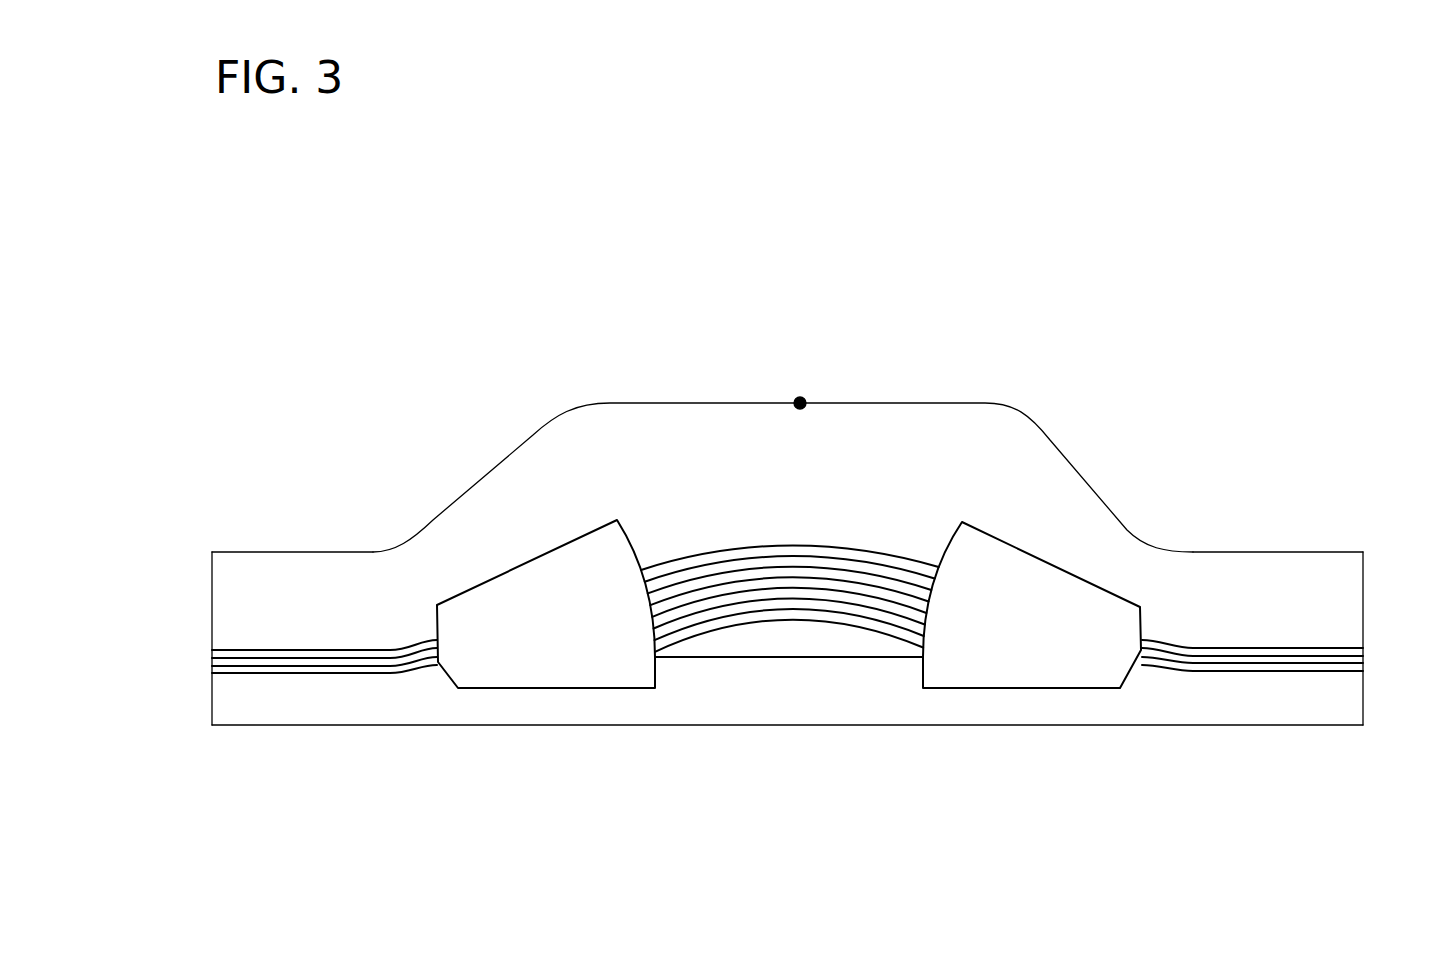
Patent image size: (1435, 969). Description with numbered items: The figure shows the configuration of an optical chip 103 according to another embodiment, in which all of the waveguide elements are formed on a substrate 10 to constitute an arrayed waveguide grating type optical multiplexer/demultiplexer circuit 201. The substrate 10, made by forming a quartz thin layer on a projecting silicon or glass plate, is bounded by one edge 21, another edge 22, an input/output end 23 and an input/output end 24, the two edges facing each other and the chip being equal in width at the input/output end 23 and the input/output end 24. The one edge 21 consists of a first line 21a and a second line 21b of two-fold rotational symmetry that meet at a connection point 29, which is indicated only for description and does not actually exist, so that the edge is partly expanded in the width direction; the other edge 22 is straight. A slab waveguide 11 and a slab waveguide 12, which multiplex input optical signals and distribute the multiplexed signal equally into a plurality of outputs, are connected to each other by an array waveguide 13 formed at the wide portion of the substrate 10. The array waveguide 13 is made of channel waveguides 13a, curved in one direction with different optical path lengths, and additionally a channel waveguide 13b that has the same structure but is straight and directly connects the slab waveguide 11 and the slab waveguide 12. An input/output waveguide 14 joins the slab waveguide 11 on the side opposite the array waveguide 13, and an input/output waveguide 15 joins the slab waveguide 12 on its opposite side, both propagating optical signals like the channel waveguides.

The optical chip 103 is at (293, 232).
The arrayed waveguide grating type optical multiplexer/demultiplexer circuit 201 is at (548, 128).
The substrate 10 is at (1190, 587).
The slab waveguide 11 is at (548, 692).
The slab waveguide 12 is at (1027, 690).
The array waveguide 13 is at (788, 537).
The channel waveguide 13a is at (682, 553).
The channel waveguide 13b is at (867, 660).
The input/output waveguide 14 is at (293, 632).
The input/output waveguide 15 is at (1262, 630).
The one edge 21 is at (853, 300).
The first line 21a is at (763, 402).
The second line 21b is at (832, 402).
The another edge 22 is at (737, 727).
The input/output end 23 is at (212, 620).
The input/output end 24 is at (1363, 615).
The connection point 29 is at (805, 398).